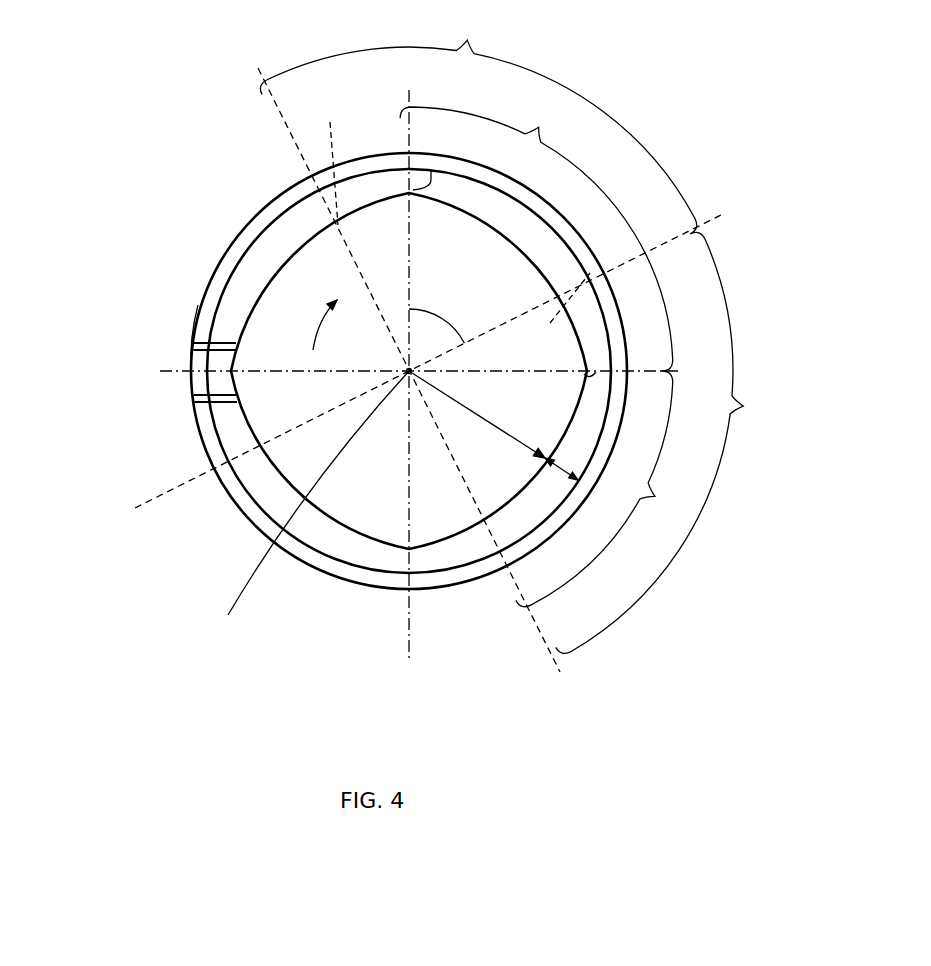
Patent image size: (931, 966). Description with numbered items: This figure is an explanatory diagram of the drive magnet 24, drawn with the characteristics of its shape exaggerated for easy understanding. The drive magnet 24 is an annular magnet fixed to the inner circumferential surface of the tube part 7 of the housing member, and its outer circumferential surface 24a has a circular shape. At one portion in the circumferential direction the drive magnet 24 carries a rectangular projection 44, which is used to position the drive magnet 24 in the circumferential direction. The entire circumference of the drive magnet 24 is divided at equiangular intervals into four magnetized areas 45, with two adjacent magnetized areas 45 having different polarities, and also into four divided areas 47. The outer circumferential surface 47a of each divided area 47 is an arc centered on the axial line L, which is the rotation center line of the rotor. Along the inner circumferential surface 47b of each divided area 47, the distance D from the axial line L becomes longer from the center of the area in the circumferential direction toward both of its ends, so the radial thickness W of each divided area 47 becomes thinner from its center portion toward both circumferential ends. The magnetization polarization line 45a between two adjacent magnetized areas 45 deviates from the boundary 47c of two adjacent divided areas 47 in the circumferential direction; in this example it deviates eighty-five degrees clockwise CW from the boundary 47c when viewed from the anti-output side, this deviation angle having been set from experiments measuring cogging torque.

The tube part 7 is at (217, 260).
The drive magnet 24 is at (297, 227).
The outer circumferential surface of the drive magnet 24a is at (213, 303).
The rectangular projection 44 is at (220, 382).
The magnetized areas 45 is at (516, 335).
The magnetization polarization line 45a is at (450, 225).
The divided areas 47 is at (446, 357).
The outer circumferential surface of the divided areas 47a is at (543, 177).
The inner circumferential surface of the divided area 47b is at (483, 231).
The boundary of the divided areas 47c is at (435, 152).
The axial line L is at (317, 507).
The distance from the axial line D is at (467, 413).
The thickness of the divided area W is at (560, 477).
The clockwise direction CW is at (317, 323).